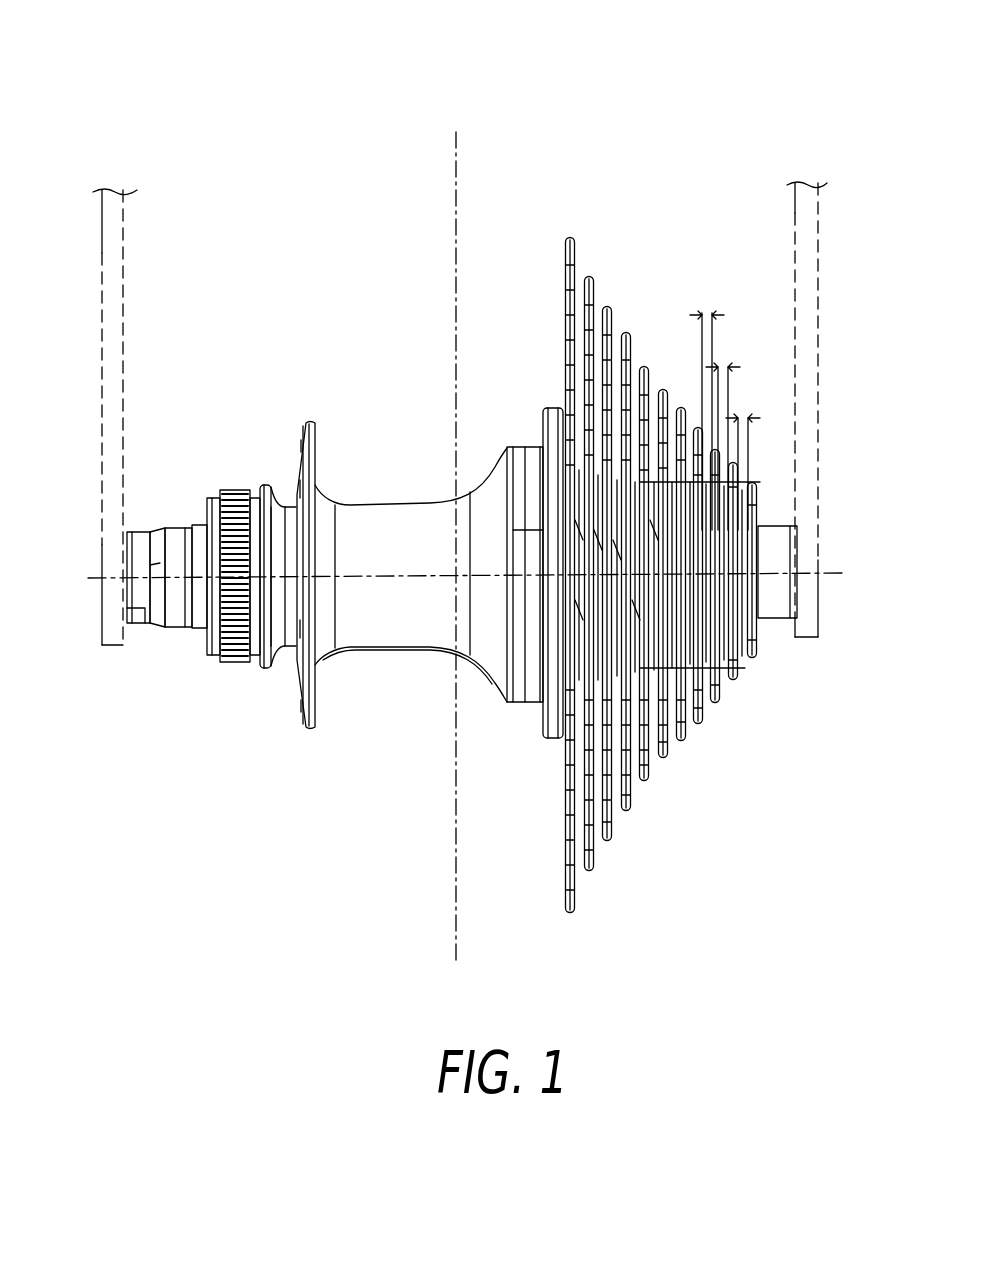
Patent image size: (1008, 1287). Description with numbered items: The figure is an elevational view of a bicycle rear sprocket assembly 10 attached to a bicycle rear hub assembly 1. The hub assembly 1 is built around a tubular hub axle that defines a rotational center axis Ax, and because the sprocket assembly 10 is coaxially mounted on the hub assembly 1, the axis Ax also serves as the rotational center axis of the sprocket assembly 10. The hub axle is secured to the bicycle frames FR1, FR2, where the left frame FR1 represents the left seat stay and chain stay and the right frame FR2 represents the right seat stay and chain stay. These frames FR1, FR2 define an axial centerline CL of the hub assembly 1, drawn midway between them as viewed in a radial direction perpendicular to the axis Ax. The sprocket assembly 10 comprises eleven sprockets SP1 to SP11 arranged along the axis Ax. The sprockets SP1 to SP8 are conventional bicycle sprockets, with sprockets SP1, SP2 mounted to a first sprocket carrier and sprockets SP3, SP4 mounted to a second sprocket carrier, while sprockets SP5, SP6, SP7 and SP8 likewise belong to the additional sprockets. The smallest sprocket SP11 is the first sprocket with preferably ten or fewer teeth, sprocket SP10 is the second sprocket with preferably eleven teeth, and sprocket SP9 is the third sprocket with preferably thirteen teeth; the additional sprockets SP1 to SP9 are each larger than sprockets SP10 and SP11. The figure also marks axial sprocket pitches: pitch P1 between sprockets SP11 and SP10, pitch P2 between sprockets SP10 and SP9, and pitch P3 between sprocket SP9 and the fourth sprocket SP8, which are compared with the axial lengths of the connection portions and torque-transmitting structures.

The bicycle rear hub assembly 1 is at (304, 745).
The bicycle rear sprocket assembly 10 is at (682, 605).
The sprocket SP1 is at (577, 913).
The sprocket SP2 is at (593, 872).
The sprocket SP3 is at (612, 842).
The sprocket SP4 is at (630, 812).
The sprocket SP5 is at (648, 782).
The sprocket SP6 is at (667, 759).
The sprocket SP7 is at (685, 742).
The fourth sprocket SP8 is at (702, 727).
The third sprocket SP9 is at (718, 705).
The second sprocket SP10 is at (733, 682).
The first sprocket SP11 is at (753, 658).
The sprocket pitch P1 is at (740, 418).
The sprocket pitch P2 is at (720, 367).
The sprocket pitch P3 is at (703, 313).
The bicycle frame FR1 is at (123, 247).
The bicycle frame FR2 is at (790, 213).
The axial centerline CL is at (456, 142).
The rotational center axis Ax is at (827, 572).